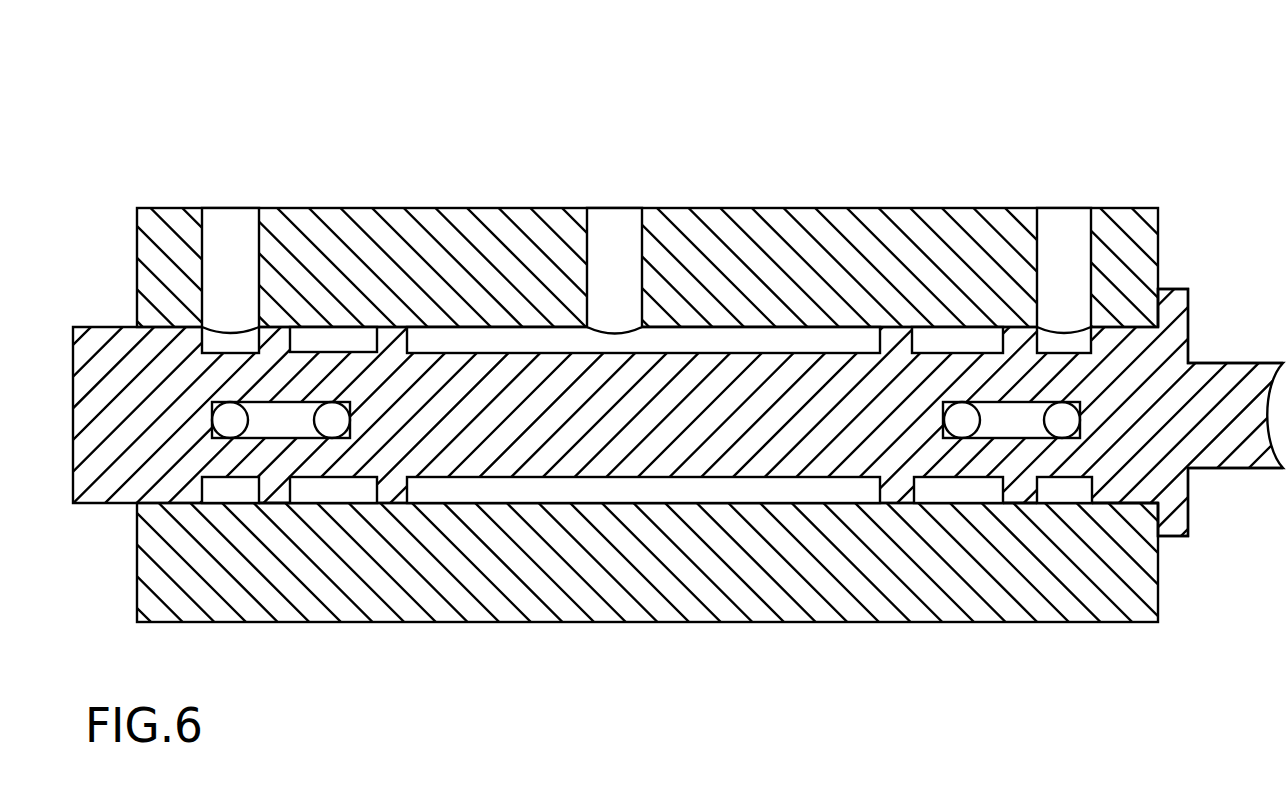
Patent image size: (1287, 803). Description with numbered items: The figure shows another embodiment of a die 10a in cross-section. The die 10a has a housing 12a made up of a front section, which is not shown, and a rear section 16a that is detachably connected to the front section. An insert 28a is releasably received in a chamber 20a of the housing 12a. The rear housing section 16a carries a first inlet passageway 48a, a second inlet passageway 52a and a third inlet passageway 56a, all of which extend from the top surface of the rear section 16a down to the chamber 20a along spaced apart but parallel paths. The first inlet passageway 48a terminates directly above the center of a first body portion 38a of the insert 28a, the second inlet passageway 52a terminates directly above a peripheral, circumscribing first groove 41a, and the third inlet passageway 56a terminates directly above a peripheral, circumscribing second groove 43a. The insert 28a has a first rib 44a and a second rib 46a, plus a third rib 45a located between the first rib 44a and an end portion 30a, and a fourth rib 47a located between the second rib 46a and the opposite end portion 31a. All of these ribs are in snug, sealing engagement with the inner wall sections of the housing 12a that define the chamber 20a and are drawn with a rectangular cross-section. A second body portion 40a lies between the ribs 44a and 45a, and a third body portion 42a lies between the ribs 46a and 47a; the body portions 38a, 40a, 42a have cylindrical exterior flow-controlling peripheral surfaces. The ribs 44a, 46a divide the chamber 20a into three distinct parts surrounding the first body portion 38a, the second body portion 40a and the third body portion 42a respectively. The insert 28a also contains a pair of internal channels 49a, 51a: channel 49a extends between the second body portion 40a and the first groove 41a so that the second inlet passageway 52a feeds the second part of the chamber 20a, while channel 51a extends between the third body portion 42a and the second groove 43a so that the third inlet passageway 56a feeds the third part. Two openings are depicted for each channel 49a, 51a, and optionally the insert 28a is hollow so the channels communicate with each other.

The die 10a is at (857, 123).
The housing 12a is at (433, 207).
The rear section 16a is at (493, 603).
The chamber 20a is at (616, 500).
The insert 28a is at (1182, 287).
The end portion 30a is at (97, 337).
The end portion 31a is at (1123, 503).
The first body portion 38a is at (697, 477).
The second body portion 40a is at (332, 350).
The first groove 41a is at (224, 480).
The third body portion 42a is at (966, 351).
The second groove 43a is at (1069, 480).
The first rib 44a is at (379, 490).
The third rib 45a is at (273, 503).
The second rib 46a is at (892, 503).
The fourth rib 47a is at (1007, 503).
The first inlet passageway 48a is at (640, 249).
The internal channel 49a is at (293, 403).
The internal channel 51a is at (1000, 403).
The second inlet passageway 52a is at (202, 240).
The third inlet passageway 56a is at (1038, 247).